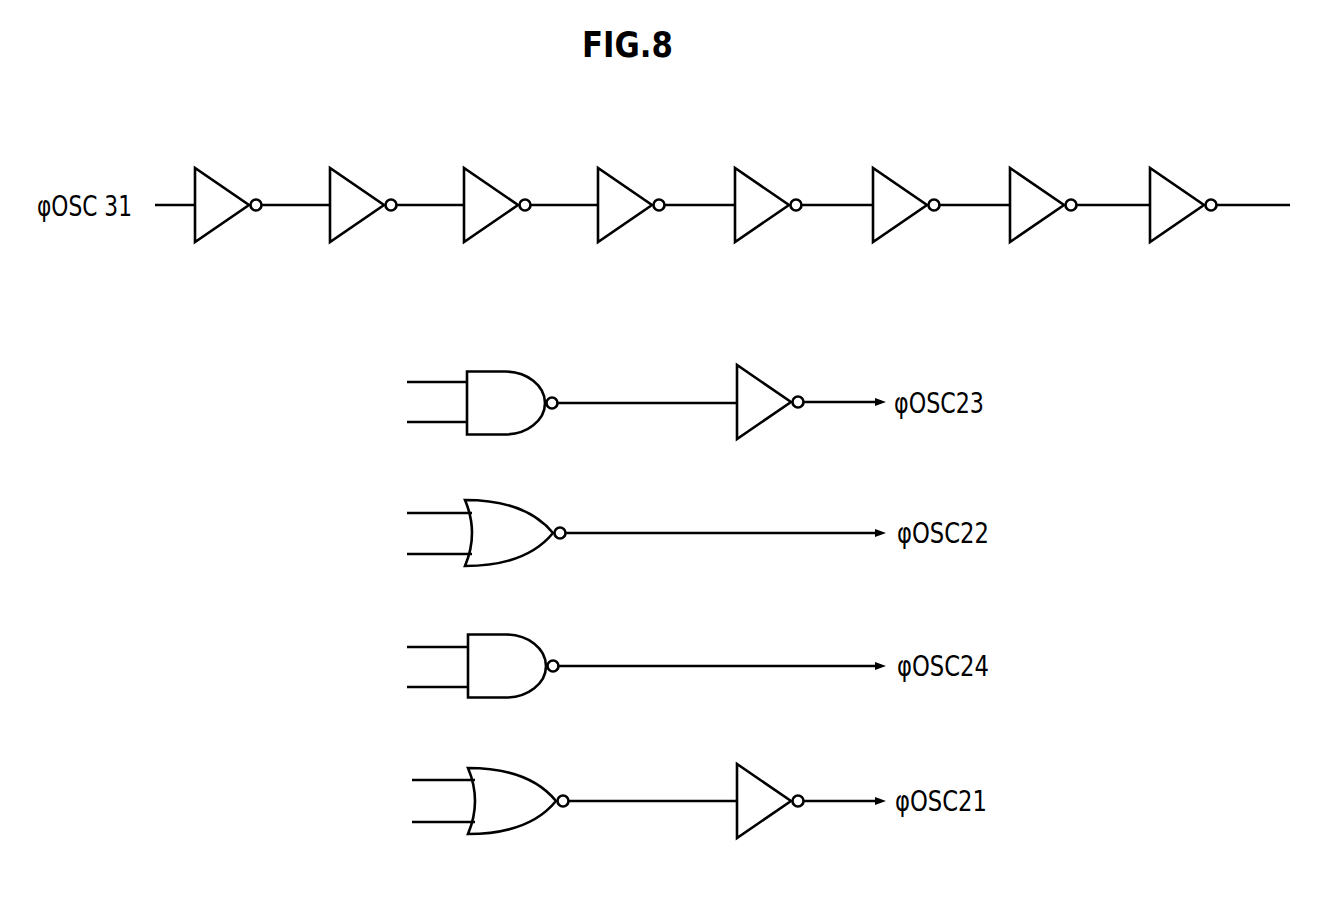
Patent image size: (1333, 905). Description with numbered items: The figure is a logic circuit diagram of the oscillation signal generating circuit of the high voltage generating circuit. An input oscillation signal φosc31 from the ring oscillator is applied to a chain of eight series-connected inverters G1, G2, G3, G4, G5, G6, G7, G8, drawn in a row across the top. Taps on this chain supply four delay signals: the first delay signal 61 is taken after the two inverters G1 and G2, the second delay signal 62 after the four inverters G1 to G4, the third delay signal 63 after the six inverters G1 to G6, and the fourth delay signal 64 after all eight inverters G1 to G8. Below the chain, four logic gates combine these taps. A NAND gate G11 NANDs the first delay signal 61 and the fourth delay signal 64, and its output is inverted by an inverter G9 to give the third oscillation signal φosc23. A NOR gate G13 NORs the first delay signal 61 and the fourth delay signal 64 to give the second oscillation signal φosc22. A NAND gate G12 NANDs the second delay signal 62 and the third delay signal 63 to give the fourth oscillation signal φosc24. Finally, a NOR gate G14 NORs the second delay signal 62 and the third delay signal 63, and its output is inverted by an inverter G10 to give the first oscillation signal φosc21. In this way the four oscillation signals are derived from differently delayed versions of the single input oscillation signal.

The first delay signal 61 is at (418, 206).
The second delay signal 62 is at (700, 206).
The third delay signal 63 is at (987, 206).
The fourth delay signal 64 is at (851, 380).
The inverter G1 is at (228, 205).
The inverter G2 is at (363, 205).
The inverter G3 is at (497, 205).
The inverter G4 is at (631, 205).
The inverter G5 is at (768, 205).
The inverter G6 is at (906, 205).
The inverter G7 is at (1043, 205).
The inverter G8 is at (1183, 205).
The inverter G9 is at (770, 402).
The inverter G10 is at (770, 801).
The NAND gate G11 is at (512, 403).
The NAND gate G12 is at (513, 666).
The NOR gate G13 is at (515, 533).
The NOR gate G14 is at (518, 801).